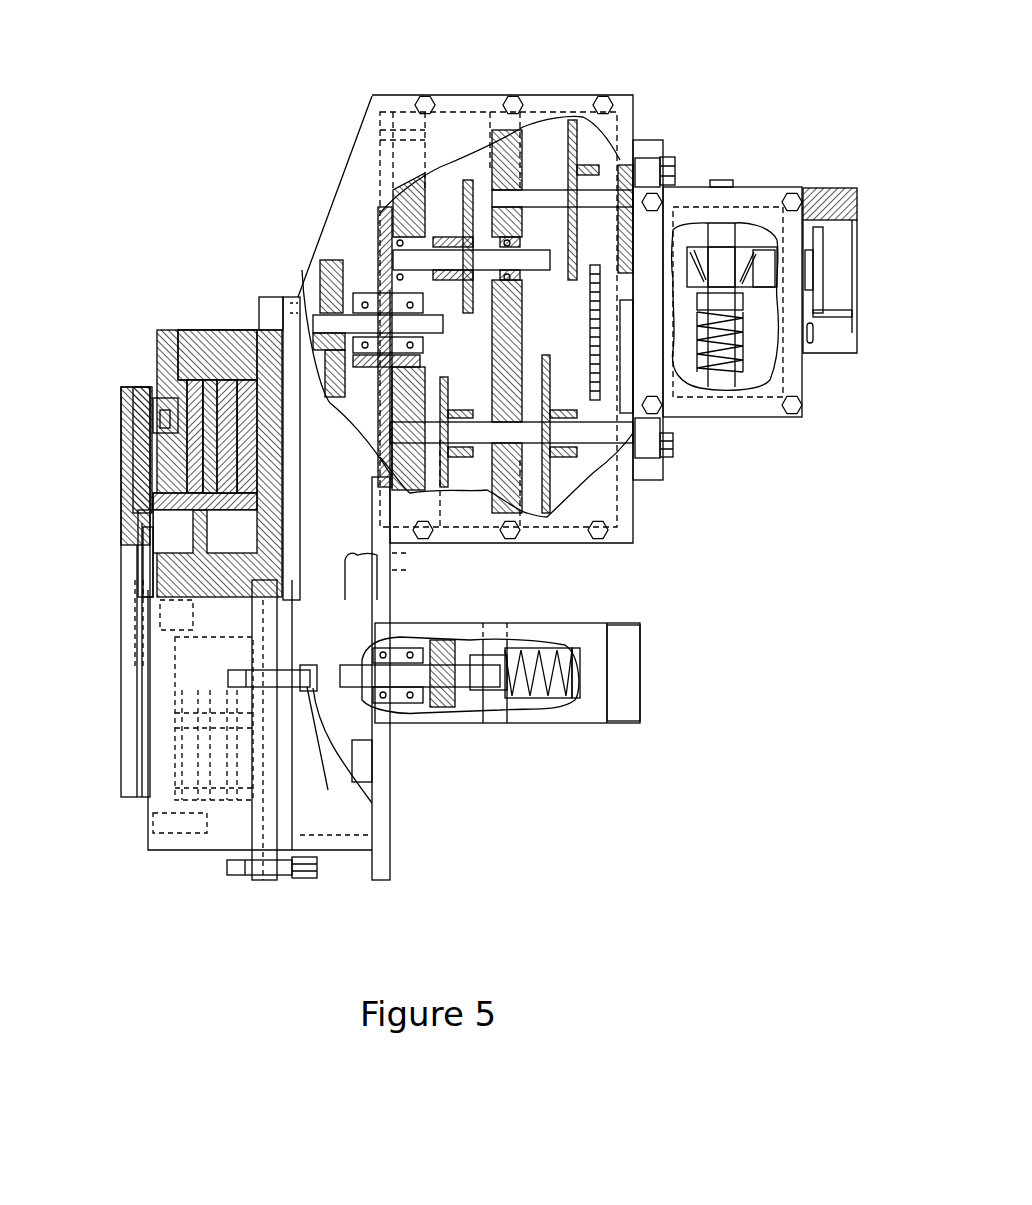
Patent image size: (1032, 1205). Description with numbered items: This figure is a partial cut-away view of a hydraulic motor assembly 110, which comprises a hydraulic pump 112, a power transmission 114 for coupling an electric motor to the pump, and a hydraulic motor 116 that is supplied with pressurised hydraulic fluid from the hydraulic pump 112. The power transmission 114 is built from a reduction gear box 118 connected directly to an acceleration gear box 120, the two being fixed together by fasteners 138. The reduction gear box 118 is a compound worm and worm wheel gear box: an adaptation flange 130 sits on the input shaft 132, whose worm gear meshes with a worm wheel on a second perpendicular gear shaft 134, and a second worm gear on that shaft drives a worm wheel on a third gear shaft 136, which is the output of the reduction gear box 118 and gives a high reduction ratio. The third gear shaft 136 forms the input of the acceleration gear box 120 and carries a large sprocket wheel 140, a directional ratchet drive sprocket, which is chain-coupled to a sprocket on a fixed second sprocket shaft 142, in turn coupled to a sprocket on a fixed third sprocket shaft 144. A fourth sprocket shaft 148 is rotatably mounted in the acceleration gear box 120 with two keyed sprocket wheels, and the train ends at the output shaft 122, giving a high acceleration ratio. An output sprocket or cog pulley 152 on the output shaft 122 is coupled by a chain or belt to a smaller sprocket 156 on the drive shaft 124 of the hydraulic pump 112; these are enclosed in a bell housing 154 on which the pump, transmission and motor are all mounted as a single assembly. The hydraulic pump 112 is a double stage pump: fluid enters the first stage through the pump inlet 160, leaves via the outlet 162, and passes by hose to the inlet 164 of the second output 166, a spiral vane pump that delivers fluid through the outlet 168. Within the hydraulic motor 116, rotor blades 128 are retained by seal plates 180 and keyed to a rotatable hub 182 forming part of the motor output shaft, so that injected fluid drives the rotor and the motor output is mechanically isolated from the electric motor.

The hydraulic motor assembly 110 is at (245, 127).
The hydraulic pump 112 is at (578, 623).
The power transmission 114 is at (690, 155).
The hydraulic motor 116 is at (185, 330).
The reduction gear box 118 is at (775, 187).
The acceleration gear box 120 is at (485, 95).
The output shaft 122 is at (327, 290).
The drive shaft 124 is at (390, 675).
The rotor blades 128 is at (228, 337).
The adaptation flange 130 is at (820, 242).
The input shaft 132 is at (772, 268).
The second perpendicular gear shaft 134 is at (722, 380).
The third gear shaft 136 is at (758, 340).
The fasteners 138 is at (663, 158).
The large sprocket wheel 140 is at (593, 415).
The second sprocket shaft 142 is at (533, 185).
The third sprocket shaft 144 is at (630, 448).
The fourth sprocket shaft 148 is at (388, 200).
The output sprocket or cog pulley 152 is at (332, 270).
The bell housing 154 is at (337, 850).
The sprocket 156 is at (318, 722).
The pump inlet 160 is at (440, 623).
The outlet 162 is at (443, 727).
The inlet 164 is at (495, 623).
The second output 166 is at (540, 700).
The outlet 168 is at (640, 670).
The seal plates 180 is at (172, 407).
The rotatable hub 182 is at (121, 425).